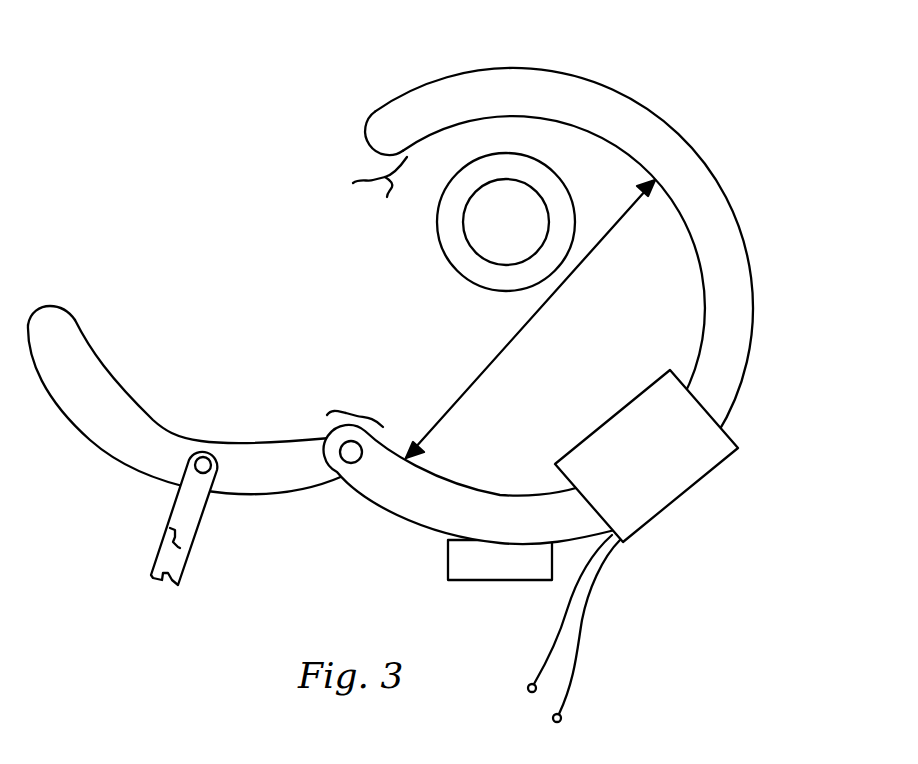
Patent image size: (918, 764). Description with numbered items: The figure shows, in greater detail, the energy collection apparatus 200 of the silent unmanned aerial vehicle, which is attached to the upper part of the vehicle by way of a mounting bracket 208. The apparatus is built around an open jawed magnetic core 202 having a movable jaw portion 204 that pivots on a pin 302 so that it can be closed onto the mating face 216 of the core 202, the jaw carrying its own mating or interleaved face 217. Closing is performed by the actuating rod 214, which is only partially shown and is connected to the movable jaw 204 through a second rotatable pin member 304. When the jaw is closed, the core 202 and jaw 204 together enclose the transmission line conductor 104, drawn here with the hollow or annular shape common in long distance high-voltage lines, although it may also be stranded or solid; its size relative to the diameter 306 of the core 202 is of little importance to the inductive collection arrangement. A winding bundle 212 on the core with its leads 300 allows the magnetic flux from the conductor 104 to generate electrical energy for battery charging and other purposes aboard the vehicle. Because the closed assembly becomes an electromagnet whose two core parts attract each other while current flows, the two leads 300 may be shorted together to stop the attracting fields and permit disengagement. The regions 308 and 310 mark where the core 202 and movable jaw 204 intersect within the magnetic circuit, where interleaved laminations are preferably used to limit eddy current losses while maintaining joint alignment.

The energy collection apparatus 200 is at (700, 67).
The magnetic core 202 is at (502, 223).
The movable jaw portion 204 is at (184, 360).
The mounting bracket 208 is at (522, 580).
The winding bundle 212 is at (727, 458).
The actuating rod 214 is at (165, 540).
The mating face 216 is at (363, 128).
The mating or interleaved face 217 is at (53, 303).
The transmission line conductor 104 is at (573, 207).
The leads 300 is at (583, 632).
The pin 302 is at (350, 463).
The second rotatable pin member 304 is at (217, 463).
The diameter of the core 306 is at (535, 318).
The region of core and movable jaw intersection 308 is at (375, 188).
The region of core and movable jaw intersection 310 is at (357, 415).